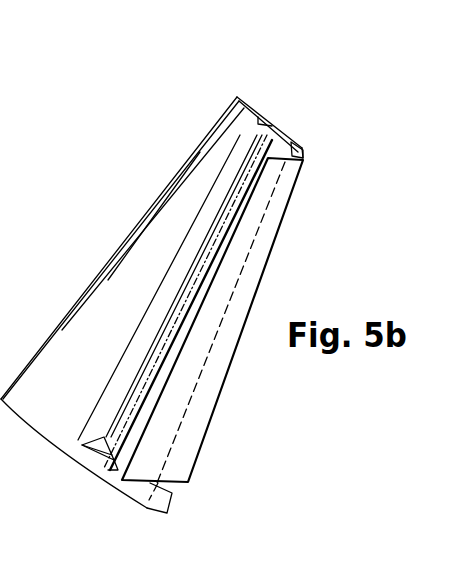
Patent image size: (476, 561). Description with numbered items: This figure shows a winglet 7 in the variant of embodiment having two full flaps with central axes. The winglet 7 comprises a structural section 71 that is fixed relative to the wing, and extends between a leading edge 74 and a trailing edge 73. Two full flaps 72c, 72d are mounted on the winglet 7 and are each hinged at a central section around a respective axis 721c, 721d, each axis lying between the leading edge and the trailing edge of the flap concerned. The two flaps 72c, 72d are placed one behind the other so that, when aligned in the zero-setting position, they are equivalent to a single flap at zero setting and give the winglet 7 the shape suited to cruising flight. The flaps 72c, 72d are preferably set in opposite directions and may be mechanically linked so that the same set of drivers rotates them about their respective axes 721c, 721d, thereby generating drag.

The winglet 7 is at (106, 210).
The structural section 71 is at (92, 333).
The leading edge 74 is at (197, 143).
The axis 721c is at (303, 157).
The axis 721d is at (258, 117).
The full flap 72c is at (198, 421).
The full flap 72d is at (99, 445).
The trailing edge 73 is at (172, 506).